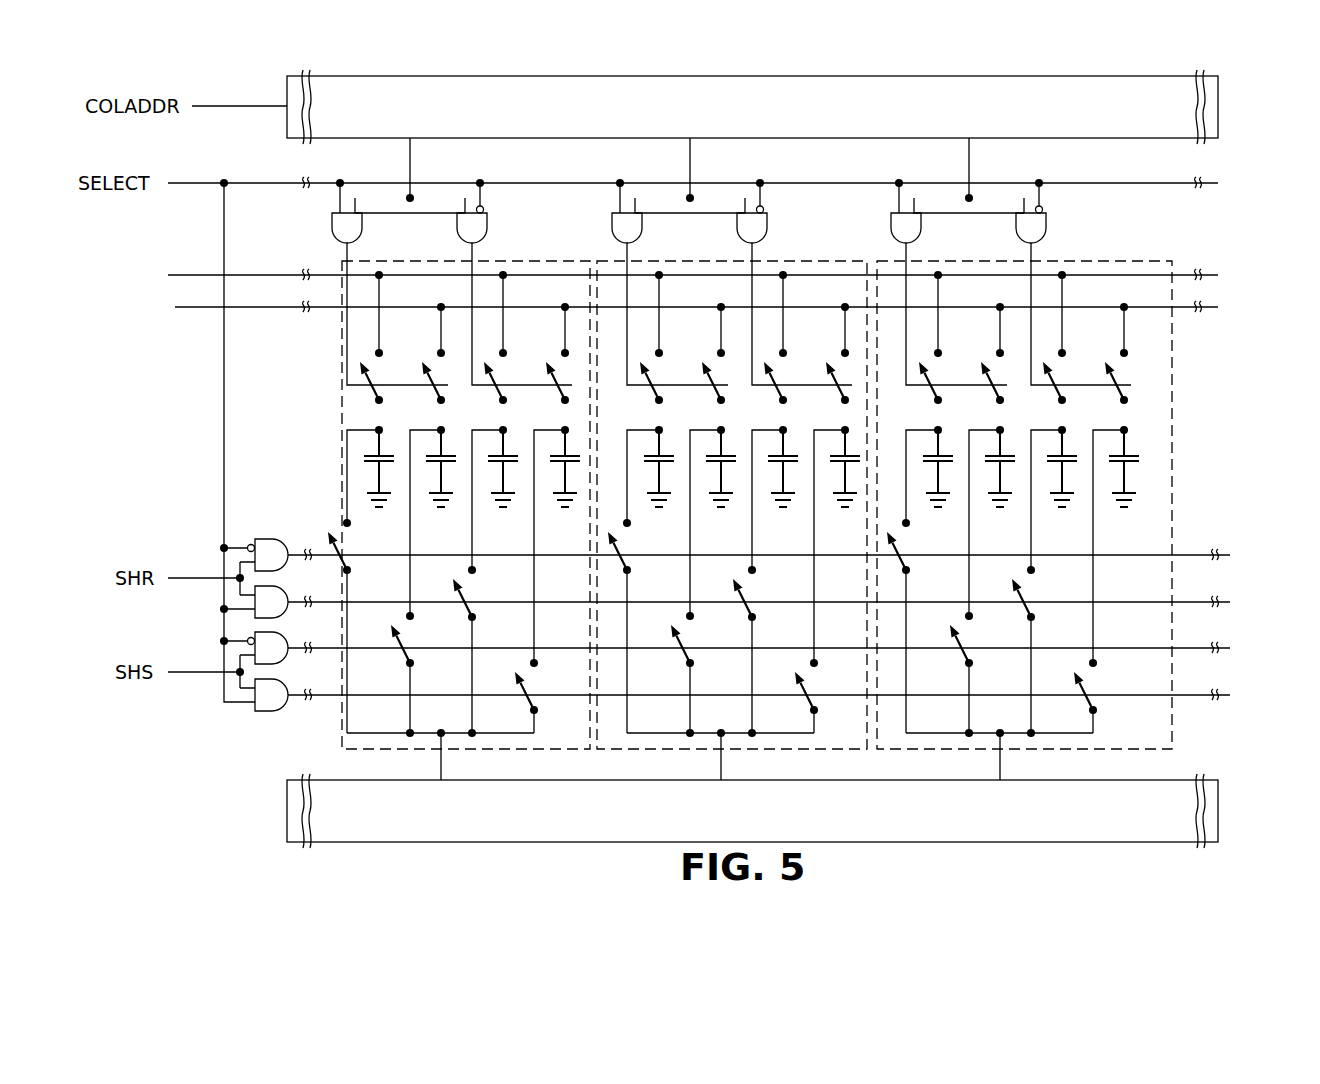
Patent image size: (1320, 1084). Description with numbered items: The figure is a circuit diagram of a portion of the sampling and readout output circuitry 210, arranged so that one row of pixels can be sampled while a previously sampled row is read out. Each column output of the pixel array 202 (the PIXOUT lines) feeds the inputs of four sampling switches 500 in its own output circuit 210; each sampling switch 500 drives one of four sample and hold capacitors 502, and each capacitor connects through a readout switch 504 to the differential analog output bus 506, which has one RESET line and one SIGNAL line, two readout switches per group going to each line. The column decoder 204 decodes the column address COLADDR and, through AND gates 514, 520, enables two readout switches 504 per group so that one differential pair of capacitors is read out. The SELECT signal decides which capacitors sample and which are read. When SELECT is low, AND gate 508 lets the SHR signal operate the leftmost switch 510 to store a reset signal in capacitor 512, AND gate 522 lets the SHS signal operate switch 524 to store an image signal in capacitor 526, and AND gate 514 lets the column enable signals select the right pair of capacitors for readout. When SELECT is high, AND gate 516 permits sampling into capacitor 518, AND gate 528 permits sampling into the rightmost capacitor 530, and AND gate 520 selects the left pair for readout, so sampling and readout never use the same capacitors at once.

The pixel array 202 is at (1218, 800).
The column decoder 204 is at (1218, 97).
The sampling and readout output circuitry 210 is at (517, 261).
The sampling switches 500 is at (1232, 518).
The sample and hold capacitors 502 is at (1232, 434).
The readout switches 504 is at (1232, 347).
The differential analog output bus 506 is at (1232, 259).
The AND gate 508 is at (285, 569).
The sampling switch 510 is at (921, 558).
The sample and hold capacitor 512 is at (952, 456).
The AND gate 514 is at (1068, 231).
The AND gate 516 is at (285, 616).
The sample and hold capacitor 518 is at (1076, 456).
The AND gate 520 is at (942, 234).
The AND gate 522 is at (285, 662).
The sampling switch 524 is at (984, 651).
The sample and hold capacitor 526 is at (1014, 456).
The AND gate 528 is at (285, 709).
The sample and hold capacitor 530 is at (1138, 456).